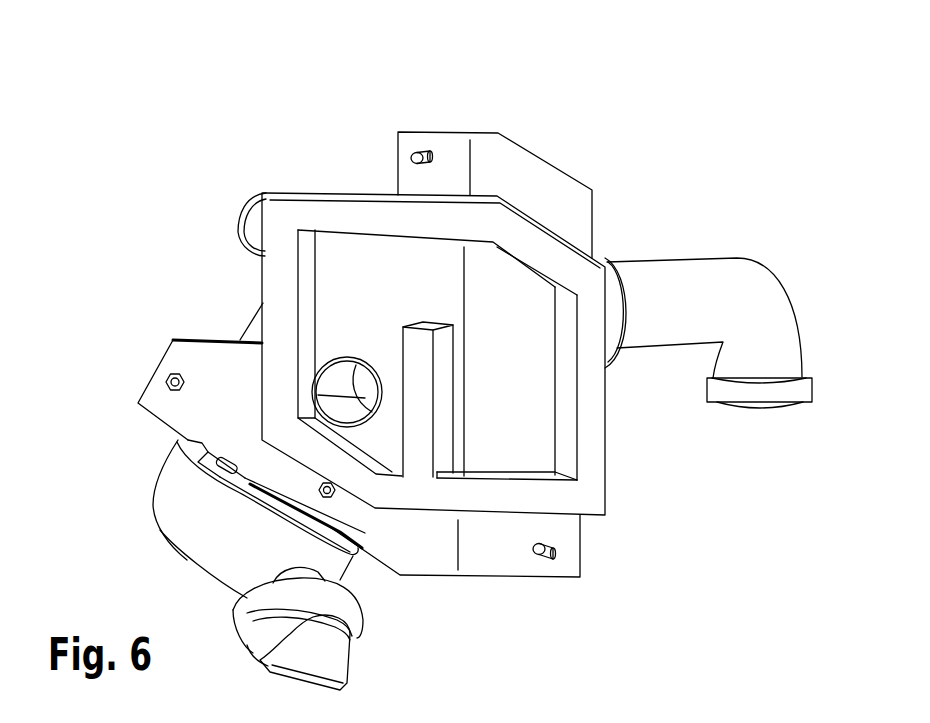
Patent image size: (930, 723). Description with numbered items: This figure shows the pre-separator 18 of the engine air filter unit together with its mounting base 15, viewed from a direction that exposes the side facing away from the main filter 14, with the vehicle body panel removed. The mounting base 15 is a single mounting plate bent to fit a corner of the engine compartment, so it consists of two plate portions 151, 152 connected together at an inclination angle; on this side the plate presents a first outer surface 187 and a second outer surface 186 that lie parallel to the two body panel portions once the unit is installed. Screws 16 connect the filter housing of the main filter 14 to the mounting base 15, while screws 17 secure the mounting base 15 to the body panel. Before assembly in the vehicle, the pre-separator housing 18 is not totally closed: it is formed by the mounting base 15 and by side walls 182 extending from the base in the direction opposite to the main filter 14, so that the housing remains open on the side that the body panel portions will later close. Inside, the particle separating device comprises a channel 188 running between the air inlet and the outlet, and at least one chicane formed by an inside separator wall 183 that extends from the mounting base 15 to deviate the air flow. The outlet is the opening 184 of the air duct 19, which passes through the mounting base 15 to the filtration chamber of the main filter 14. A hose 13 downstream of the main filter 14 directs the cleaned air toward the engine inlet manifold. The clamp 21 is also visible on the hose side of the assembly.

The hose 13 is at (688, 290).
The main filter 14 is at (230, 538).
The mounting base 15 is at (485, 555).
The screws 16 is at (164, 383).
The screws 17 is at (433, 158).
The pre-separator 18 is at (423, 122).
The air duct 19 is at (262, 345).
The clamp 21 is at (293, 448).
The plate portion 151 is at (518, 325).
The plate portion 152 is at (415, 265).
The side walls 182 is at (392, 355).
The inside separator wall 183 is at (422, 360).
The opening 184 is at (343, 357).
The second outer surface 186 is at (610, 343).
The first outer surface 187 is at (402, 222).
The channel 188 is at (500, 437).